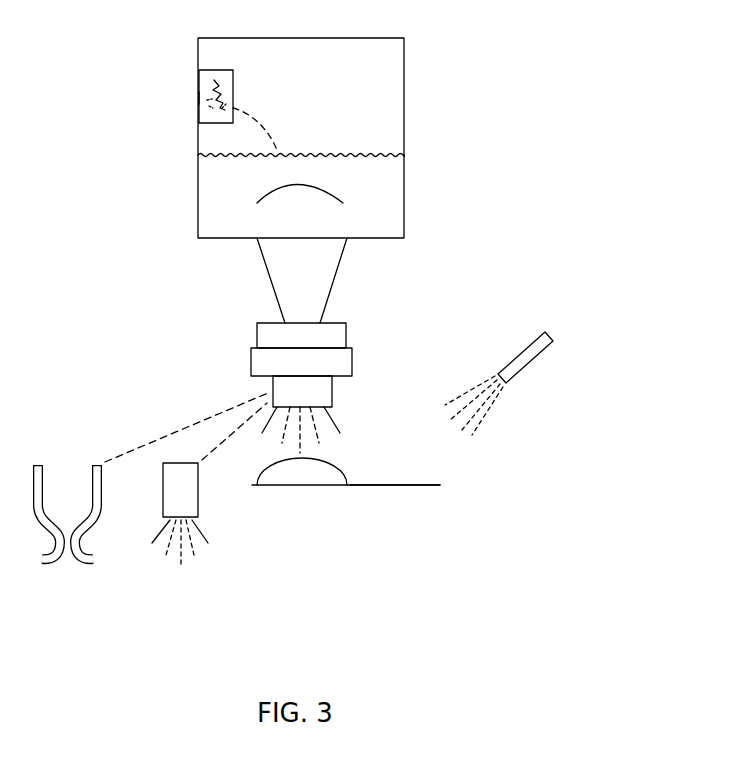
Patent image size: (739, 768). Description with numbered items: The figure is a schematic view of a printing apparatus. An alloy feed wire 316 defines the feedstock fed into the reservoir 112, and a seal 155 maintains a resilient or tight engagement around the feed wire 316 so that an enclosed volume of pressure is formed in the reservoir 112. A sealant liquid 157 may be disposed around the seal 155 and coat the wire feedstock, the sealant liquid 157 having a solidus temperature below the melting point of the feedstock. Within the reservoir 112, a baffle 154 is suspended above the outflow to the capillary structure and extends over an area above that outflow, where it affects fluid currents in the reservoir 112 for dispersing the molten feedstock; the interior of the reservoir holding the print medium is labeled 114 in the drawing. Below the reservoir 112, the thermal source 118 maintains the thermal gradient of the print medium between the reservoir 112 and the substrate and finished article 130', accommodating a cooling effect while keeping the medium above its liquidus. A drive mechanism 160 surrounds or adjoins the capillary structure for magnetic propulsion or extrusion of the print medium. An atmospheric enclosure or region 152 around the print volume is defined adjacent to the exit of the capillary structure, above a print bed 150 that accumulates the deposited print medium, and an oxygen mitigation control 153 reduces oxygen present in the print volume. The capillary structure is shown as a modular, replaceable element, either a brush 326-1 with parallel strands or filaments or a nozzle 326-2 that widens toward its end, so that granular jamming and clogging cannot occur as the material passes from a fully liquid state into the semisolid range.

The reservoir 112 is at (404, 90).
The liquid 114 is at (245, 223).
The thermal source 118 is at (347, 333).
The finished article 130' is at (311, 493).
The print bed 150 is at (430, 485).
The atmospheric enclosure or region 152 is at (390, 467).
The oxygen mitigation control 153 is at (550, 333).
The baffle 154 is at (343, 200).
The seal 155 is at (197, 107).
The sealant liquid 157 is at (217, 83).
The drive mechanism 160 is at (353, 363).
The alloy feed wire 316 is at (198, 98).
The brush 326-1 is at (207, 560).
The nozzle 326-2 is at (70, 560).